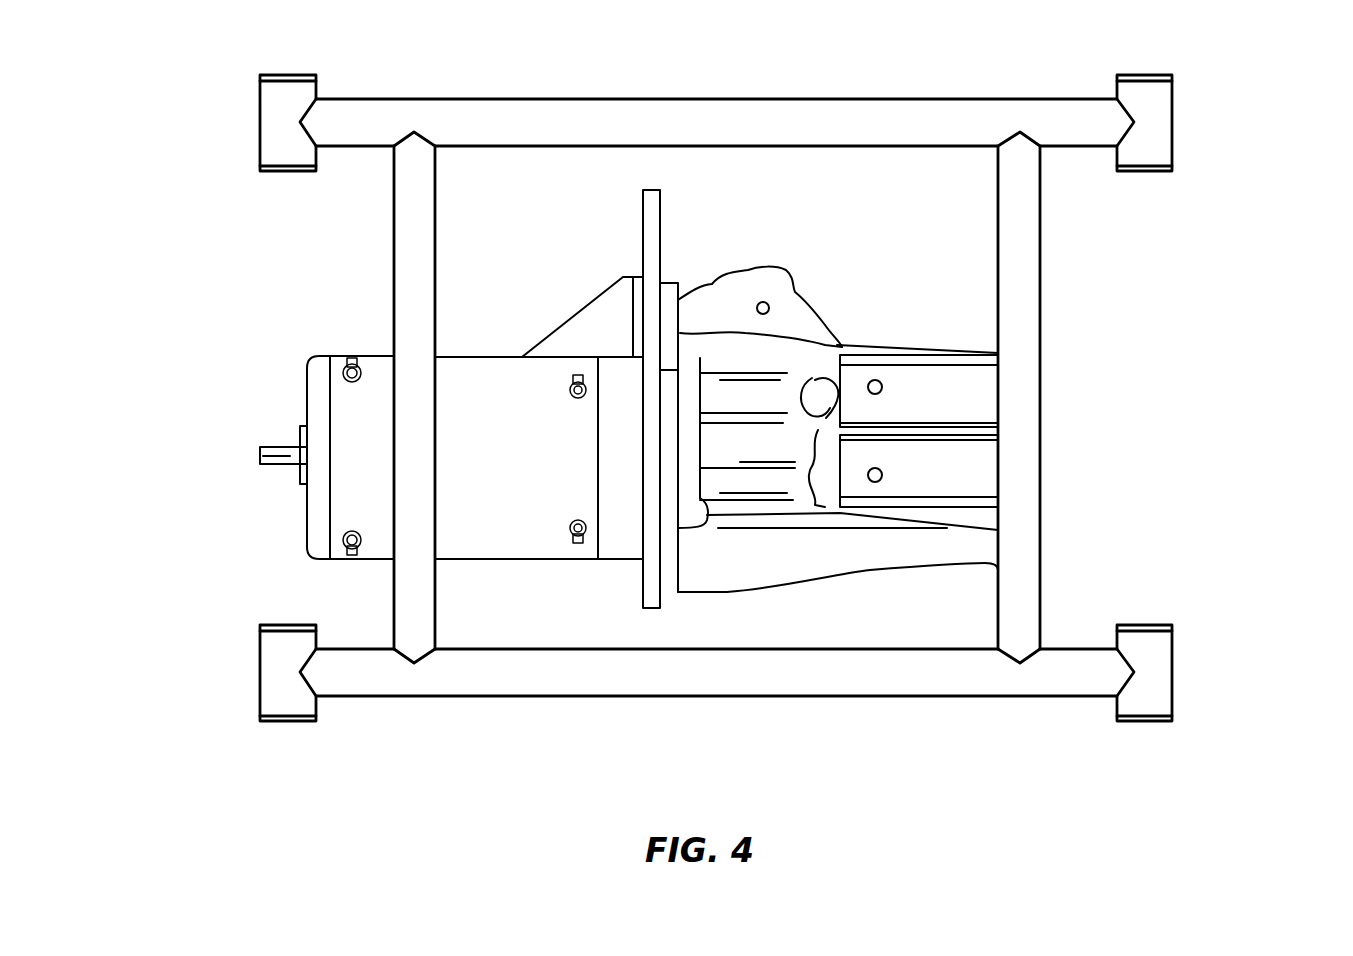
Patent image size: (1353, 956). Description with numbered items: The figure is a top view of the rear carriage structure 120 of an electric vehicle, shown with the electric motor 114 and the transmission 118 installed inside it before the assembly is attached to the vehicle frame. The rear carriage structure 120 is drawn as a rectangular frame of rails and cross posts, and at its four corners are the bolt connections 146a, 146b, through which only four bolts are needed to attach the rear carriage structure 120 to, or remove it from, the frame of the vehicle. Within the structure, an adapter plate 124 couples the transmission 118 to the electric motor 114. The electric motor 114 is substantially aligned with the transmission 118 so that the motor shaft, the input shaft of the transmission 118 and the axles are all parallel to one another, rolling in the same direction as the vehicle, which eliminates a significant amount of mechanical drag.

The electric motor 114 is at (343, 473).
The transmission 118 is at (758, 370).
The rear carriage structure 120 is at (412, 719).
The adapter plate 124 is at (643, 590).
The bolt connection 146a is at (273, 120).
The bolt connection 146b is at (1163, 114).